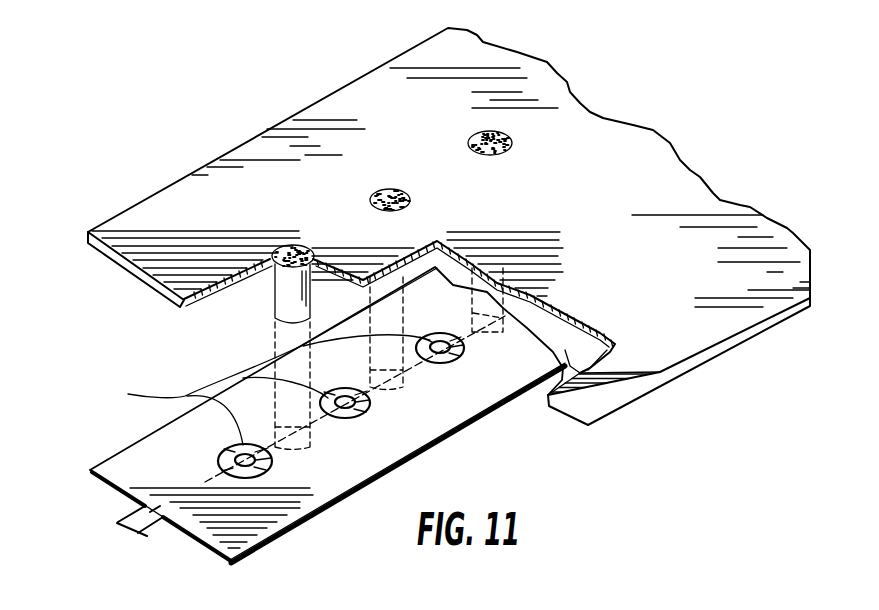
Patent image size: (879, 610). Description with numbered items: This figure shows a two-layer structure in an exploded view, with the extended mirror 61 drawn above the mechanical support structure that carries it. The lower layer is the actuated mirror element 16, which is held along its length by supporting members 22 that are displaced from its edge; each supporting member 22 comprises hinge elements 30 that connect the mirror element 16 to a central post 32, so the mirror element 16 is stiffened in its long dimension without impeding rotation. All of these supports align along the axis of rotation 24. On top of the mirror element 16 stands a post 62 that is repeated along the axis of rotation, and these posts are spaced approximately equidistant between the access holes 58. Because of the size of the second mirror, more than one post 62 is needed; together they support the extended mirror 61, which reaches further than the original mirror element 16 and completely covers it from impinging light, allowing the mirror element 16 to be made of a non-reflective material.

The mirror element 16 is at (477, 398).
The supporting member 22 is at (276, 458).
The axis of rotation 24 is at (538, 300).
The hinge element 30 is at (428, 334).
The central post 32 is at (464, 358).
The access hole 58 is at (265, 356).
The extended mirror 61 is at (252, 219).
The post 62 is at (400, 165).